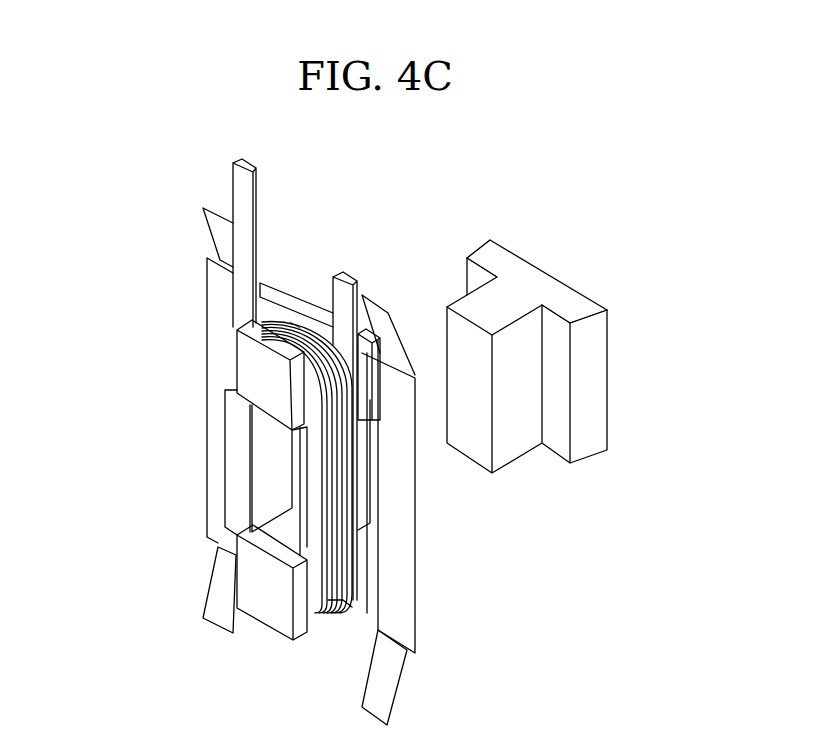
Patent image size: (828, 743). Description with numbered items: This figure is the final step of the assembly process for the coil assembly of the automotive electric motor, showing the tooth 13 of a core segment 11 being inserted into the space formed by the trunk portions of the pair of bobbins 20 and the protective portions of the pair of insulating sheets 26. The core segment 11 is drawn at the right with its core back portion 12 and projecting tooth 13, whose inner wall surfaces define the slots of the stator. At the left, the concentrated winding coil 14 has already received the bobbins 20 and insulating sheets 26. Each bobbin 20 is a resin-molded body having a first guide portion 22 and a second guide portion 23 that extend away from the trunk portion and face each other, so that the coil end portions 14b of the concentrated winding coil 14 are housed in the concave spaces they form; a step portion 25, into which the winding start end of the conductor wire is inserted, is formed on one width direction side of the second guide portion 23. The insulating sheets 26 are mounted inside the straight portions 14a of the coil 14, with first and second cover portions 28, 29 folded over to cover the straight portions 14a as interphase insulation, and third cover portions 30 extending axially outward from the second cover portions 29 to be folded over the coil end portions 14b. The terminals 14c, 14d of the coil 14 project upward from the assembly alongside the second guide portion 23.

The core segment 11 is at (512, 242).
The core back portion 12 is at (572, 293).
The tooth 13 is at (500, 300).
The concentrated winding coil 14 is at (350, 537).
The straight portions 14a is at (347, 482).
The coil end portions 14b is at (295, 323).
The terminal 14c is at (347, 292).
The terminal 14d is at (238, 187).
The bobbin 20 is at (240, 352).
The first guide portion 22 is at (248, 373).
The second guide portion 23 is at (281, 283).
The step portion 25 is at (362, 343).
The insulating sheet 26 is at (302, 466).
The first cover portion 28 is at (238, 442).
The second cover portion 29 is at (213, 288).
The third cover portion 30 is at (210, 222).